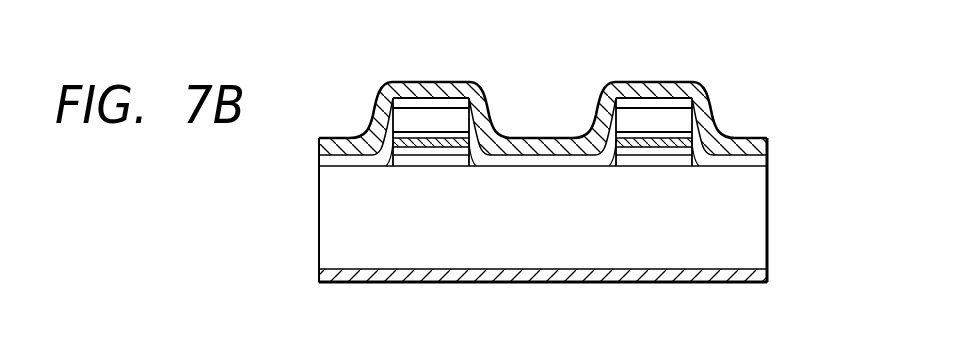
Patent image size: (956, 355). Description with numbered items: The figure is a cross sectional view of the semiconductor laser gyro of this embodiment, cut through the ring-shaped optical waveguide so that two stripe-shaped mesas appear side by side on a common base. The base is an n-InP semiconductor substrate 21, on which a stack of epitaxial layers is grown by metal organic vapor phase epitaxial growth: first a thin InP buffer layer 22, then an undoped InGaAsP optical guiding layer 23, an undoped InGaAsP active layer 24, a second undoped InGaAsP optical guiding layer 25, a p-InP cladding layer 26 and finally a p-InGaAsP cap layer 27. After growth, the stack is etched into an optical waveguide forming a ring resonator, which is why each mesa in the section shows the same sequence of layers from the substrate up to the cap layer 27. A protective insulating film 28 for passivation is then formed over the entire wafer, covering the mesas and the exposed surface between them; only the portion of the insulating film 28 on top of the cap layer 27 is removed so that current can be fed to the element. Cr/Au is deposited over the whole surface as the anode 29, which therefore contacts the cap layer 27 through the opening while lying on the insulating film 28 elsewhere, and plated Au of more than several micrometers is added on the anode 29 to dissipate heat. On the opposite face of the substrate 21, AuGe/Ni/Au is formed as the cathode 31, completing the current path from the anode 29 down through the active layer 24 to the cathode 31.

The semiconductor substrate 21 is at (768, 210).
The buffer layer 22 is at (614, 160).
The optical guiding layer 23 is at (620, 147).
The active layer 24 is at (616, 120).
The optical guiding layer 25 is at (397, 135).
The cladding layer 26 is at (402, 120).
The cap layer 27 is at (412, 106).
The insulating film 28 is at (762, 158).
The anode 29 is at (739, 140).
The cathode 31 is at (712, 275).